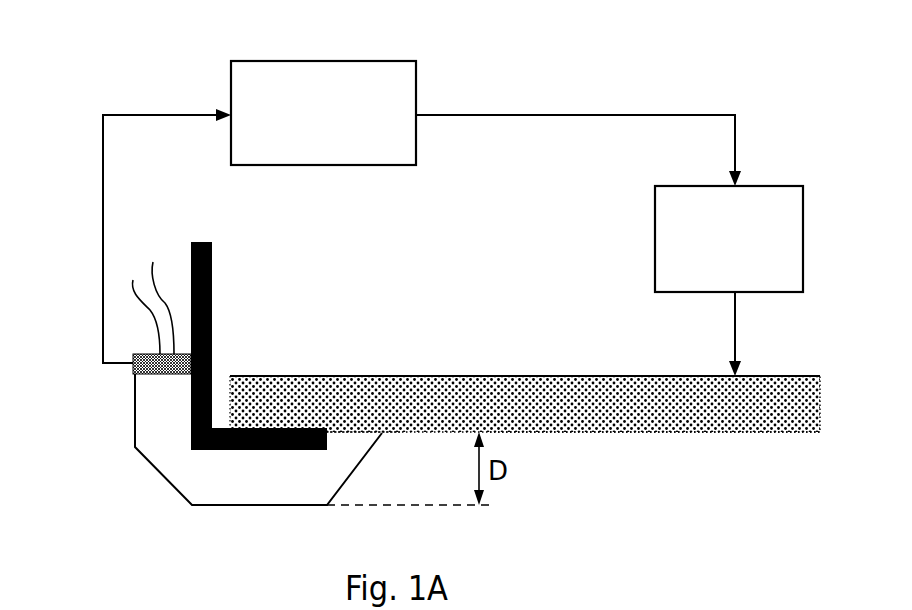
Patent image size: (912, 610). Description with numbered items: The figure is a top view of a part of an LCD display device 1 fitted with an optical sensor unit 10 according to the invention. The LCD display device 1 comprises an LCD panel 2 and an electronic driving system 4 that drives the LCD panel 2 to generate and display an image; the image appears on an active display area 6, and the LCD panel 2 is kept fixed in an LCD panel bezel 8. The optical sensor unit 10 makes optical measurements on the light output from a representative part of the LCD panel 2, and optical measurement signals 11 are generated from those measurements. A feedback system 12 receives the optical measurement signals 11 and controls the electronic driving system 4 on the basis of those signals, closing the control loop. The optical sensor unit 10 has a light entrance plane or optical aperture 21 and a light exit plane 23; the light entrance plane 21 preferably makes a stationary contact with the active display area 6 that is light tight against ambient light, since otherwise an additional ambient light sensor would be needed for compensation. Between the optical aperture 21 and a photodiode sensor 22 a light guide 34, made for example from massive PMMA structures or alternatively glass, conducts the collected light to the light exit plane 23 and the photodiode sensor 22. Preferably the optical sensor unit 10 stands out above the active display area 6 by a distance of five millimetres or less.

The LCD display device 1 is at (578, 338).
The LCD panel 2 is at (517, 393).
The electronic driving system 4 is at (780, 255).
The active display area 6 is at (547, 432).
The LCD panel bezel 8 is at (212, 305).
The optical sensor unit 10 is at (132, 491).
The optical measurement signals 11 is at (103, 193).
The feedback system 12 is at (368, 80).
The light entrance plane 21 is at (355, 432).
The photodiode sensor 22 is at (185, 353).
The light exit plane 23 is at (163, 375).
The light guide 34 is at (298, 482).